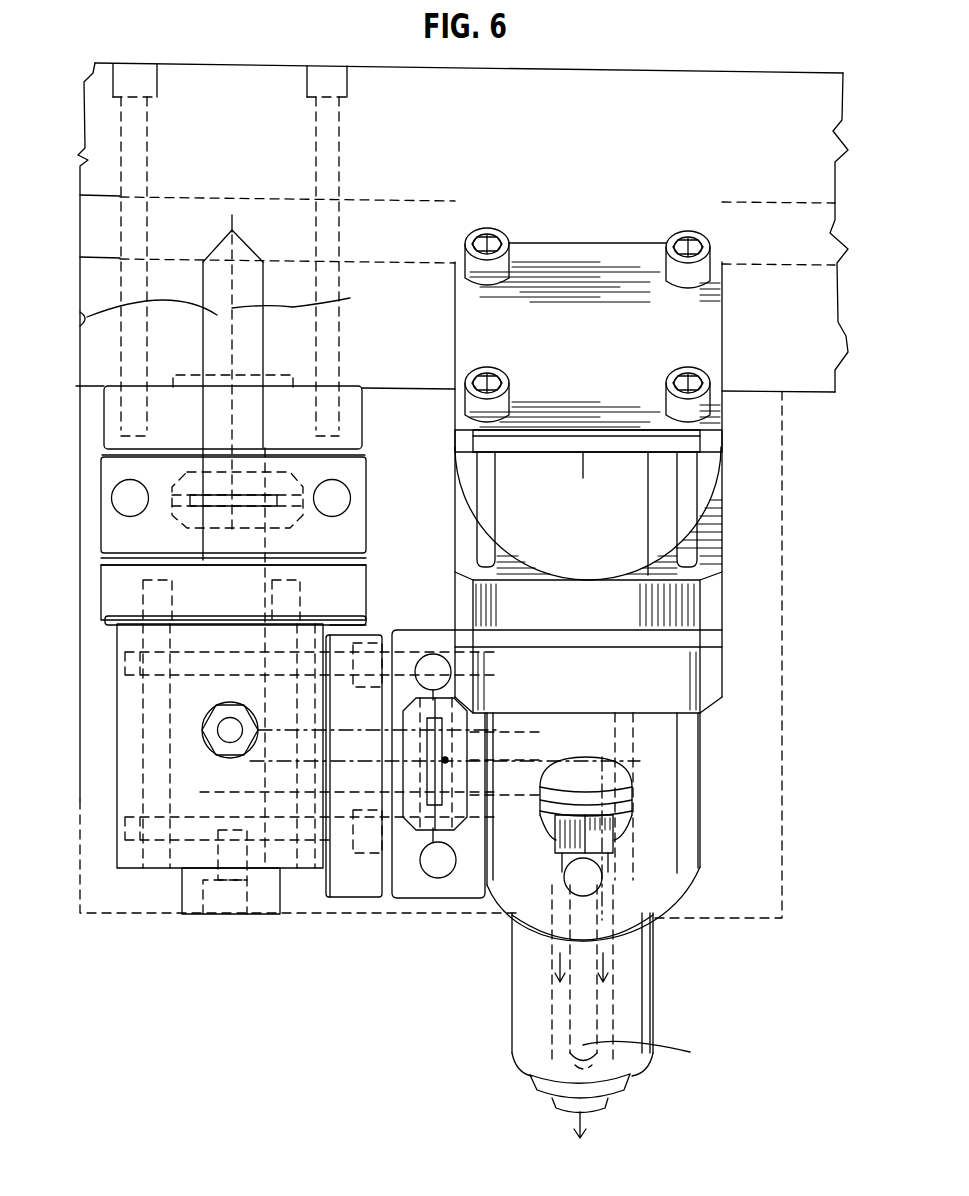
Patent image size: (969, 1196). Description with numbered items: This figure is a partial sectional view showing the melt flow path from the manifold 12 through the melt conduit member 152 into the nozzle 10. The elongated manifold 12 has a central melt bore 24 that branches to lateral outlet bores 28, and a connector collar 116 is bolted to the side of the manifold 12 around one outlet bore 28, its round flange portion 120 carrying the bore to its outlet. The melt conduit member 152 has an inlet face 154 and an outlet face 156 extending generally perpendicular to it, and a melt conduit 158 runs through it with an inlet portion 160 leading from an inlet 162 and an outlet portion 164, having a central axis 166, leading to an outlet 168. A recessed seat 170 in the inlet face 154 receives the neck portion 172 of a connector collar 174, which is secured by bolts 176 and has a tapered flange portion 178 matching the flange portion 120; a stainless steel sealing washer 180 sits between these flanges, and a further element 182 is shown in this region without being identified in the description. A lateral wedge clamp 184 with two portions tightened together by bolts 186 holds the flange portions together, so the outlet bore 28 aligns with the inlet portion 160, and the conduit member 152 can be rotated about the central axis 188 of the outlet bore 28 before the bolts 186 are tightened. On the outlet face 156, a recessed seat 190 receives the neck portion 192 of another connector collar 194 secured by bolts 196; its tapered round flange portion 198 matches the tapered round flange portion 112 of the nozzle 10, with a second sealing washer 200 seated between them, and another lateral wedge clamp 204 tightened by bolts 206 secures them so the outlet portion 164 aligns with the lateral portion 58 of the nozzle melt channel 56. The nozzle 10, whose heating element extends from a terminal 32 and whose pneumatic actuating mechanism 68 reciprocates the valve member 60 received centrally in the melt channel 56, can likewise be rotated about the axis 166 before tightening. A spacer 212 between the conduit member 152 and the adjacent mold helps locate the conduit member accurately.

The nozzle 10 is at (643, 1027).
The manifold 12 is at (100, 168).
The central melt bore 24 is at (100, 226).
The lateral outlet bores 28 is at (87, 317).
The terminal 32 is at (617, 893).
The melt channel 56 is at (603, 997).
The lateral portion 58 is at (533, 757).
The valve member 60 is at (583, 1045).
The pneumatic actuating mechanism 68 is at (715, 480).
The tapered round flange portion 112 is at (453, 698).
The connector collar 116 is at (365, 416).
The round flange portion 120 is at (168, 478).
The melt conduit member 152 is at (128, 757).
The inlet face 154 is at (107, 617).
The outlet face 156 is at (330, 810).
The melt conduit 158 is at (210, 780).
The inlet portion 160 is at (212, 688).
The inlet 162 is at (243, 495).
The outlet portion 164 is at (300, 790).
The central axis 166 is at (540, 758).
The outlet 168 is at (440, 775).
The recessed seat 170 is at (278, 616).
The neck portion 172 is at (175, 630).
The connector collar 174 is at (120, 585).
The bolts 176 is at (153, 726).
The tapered flange portion 178 is at (192, 503).
The sealing washer 180 is at (210, 493).
The spring 182 is at (172, 517).
The lateral wedge clamp 184 is at (111, 498).
The bolts 186 is at (350, 497).
The central axis 188 is at (340, 302).
The recessed seat 190 is at (320, 795).
The neck portion 192 is at (315, 800).
The connector collar 194 is at (370, 885).
The bolts 196 is at (183, 835).
The tapered round flange portion 198 is at (438, 880).
The sealing washer 200 is at (403, 736).
The lateral wedge clamp 204 is at (478, 900).
The bolts 206 is at (430, 663).
The spacer 212 is at (200, 900).